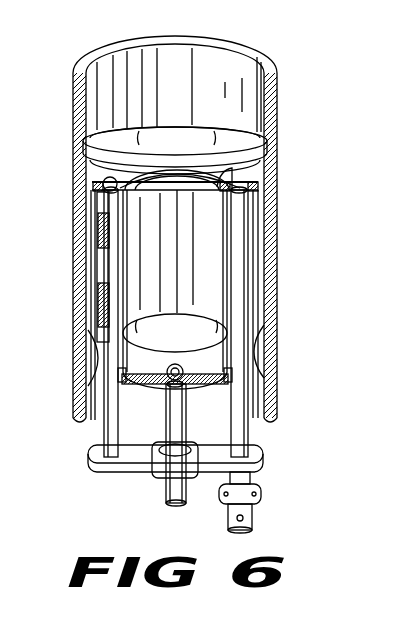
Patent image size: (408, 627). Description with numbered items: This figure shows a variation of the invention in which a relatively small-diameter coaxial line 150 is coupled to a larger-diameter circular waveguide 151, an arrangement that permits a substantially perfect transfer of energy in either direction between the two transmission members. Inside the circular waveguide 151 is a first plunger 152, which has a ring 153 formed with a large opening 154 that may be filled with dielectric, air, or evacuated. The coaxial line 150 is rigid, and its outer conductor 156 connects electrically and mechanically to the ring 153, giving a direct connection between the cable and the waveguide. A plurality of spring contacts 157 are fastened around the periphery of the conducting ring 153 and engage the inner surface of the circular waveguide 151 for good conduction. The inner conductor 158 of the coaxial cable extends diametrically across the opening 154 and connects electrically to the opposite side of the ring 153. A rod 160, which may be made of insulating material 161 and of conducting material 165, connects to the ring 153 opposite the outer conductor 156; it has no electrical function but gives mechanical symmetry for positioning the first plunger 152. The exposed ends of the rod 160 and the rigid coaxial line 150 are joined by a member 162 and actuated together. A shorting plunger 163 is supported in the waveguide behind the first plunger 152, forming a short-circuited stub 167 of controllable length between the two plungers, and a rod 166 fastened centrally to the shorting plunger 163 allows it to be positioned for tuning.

The coaxial line 150 is at (253, 268).
The circular waveguide 151 is at (273, 130).
The first plunger 152 is at (215, 192).
The ring 153 is at (167, 157).
The opening 154 is at (188, 188).
The outer conductor 156 is at (242, 253).
The spring contacts 157 is at (263, 170).
The inner conductor 158 is at (158, 192).
The rod 160 is at (123, 268).
The insulating material 161 is at (105, 205).
The member 162 is at (142, 473).
The shorting plunger 163 is at (149, 387).
The conducting material 165 is at (105, 280).
The rod 166 is at (186, 438).
The short-circuited stub 167 is at (220, 271).